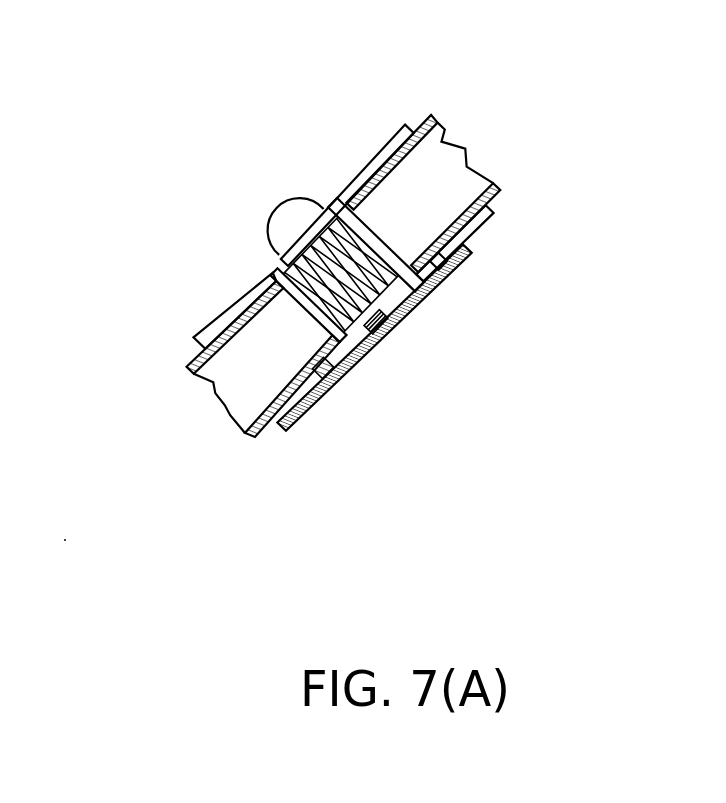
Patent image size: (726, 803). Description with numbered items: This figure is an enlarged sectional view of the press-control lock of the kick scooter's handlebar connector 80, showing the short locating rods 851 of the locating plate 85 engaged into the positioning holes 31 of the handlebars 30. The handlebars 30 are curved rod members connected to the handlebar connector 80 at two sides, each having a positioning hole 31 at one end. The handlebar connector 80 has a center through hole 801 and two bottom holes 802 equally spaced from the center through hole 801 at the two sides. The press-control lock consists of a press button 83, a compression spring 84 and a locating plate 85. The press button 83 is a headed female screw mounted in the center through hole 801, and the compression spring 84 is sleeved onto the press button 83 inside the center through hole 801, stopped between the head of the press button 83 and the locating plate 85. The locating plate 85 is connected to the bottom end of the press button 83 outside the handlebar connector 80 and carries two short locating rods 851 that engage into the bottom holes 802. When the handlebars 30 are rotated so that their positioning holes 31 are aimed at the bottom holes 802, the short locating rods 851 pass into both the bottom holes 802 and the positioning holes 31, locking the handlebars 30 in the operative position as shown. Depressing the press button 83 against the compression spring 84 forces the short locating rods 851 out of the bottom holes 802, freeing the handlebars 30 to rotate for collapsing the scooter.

The handlebar 30 is at (453, 188).
The positioning hole 31 is at (320, 370).
The handlebar connector 80 is at (362, 177).
The center through hole 801 is at (340, 318).
The bottom hole 802 is at (482, 250).
The press button 83 is at (297, 230).
The compression spring 84 is at (268, 257).
The locating plate 85 is at (470, 253).
The short locating rod 851 is at (330, 398).